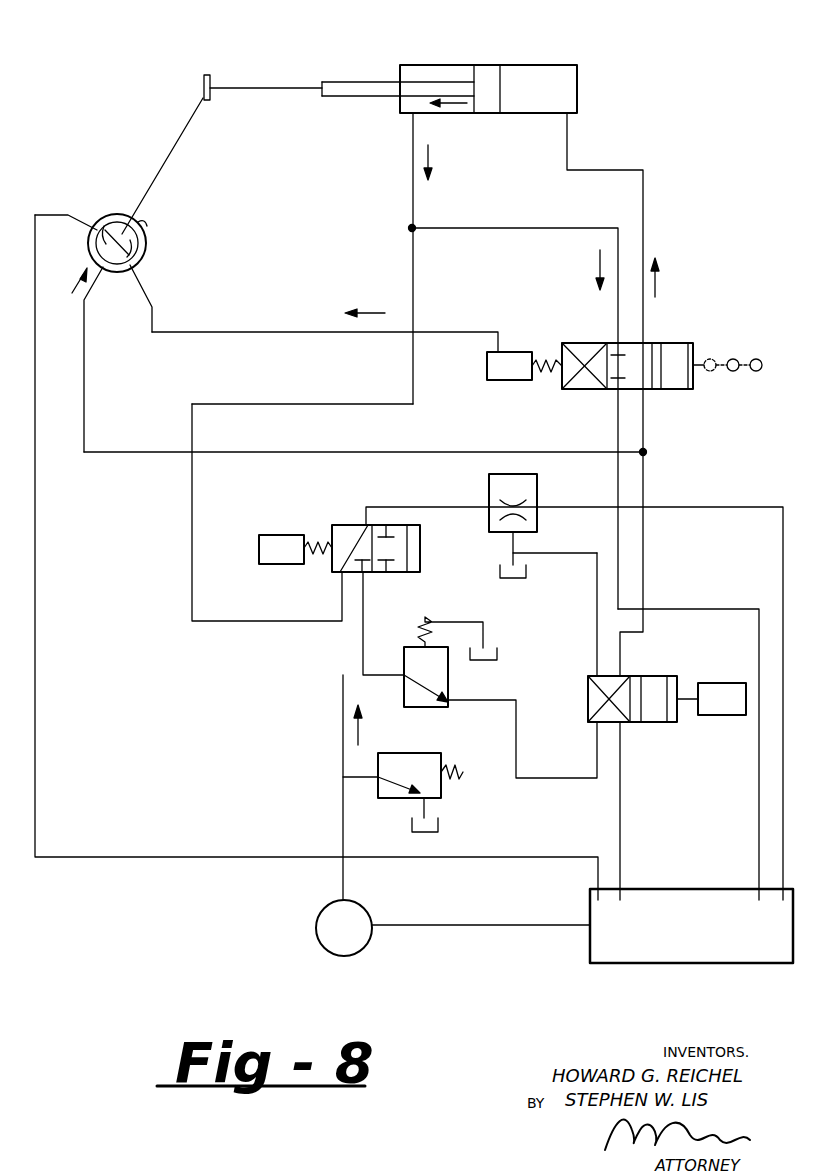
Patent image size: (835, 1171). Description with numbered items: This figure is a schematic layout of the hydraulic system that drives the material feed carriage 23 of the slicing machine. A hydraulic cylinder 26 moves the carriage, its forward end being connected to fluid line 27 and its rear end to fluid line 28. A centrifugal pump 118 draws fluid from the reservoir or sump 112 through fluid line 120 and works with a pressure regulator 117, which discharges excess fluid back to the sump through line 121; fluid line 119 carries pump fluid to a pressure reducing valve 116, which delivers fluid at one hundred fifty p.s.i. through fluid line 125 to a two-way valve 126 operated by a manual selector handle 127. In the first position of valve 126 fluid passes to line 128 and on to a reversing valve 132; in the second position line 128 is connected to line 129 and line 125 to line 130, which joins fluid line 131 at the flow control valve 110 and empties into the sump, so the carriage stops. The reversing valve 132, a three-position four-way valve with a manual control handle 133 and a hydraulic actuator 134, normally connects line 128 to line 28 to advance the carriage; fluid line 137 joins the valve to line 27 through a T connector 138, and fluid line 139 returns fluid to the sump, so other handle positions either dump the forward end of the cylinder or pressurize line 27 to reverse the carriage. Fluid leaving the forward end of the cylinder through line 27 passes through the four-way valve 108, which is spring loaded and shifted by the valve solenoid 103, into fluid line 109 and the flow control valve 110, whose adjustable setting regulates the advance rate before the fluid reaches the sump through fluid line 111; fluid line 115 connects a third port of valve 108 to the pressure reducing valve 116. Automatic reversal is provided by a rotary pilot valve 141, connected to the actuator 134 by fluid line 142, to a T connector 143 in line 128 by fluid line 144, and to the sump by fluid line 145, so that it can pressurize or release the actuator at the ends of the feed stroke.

The material feed carriage 23 is at (211, 72).
The hydraulic cylinder 26 is at (528, 65).
The fluid line 27 is at (413, 290).
The fluid line 28 is at (641, 197).
The valve solenoid 103 is at (278, 564).
The four-way valve 108 is at (420, 551).
The fluid line 109 is at (400, 506).
The flow control valve 110 is at (487, 490).
The fluid line 111 is at (781, 553).
The reservoir or sump 112 is at (691, 926).
The fluid line 115 is at (363, 646).
The pressure reducing valve 116 is at (425, 707).
The pressure regulator 117 is at (403, 798).
The centrifugal pump 118 is at (320, 945).
The fluid line 119 is at (343, 726).
The fluid line 120 is at (460, 925).
The line 121 is at (428, 813).
The fluid line 125 is at (520, 750).
The two-way valve 126 is at (645, 676).
The manual selector handle 127 is at (716, 715).
The line 128 is at (644, 487).
The line 129 is at (622, 818).
The line 130 is at (597, 652).
The fluid line 131 is at (528, 570).
The reversing valve 132 is at (678, 389).
The manual control handle 133 is at (730, 357).
The hydraulic actuator 134 is at (518, 352).
The fluid line 137 is at (505, 228).
The T connector 138 is at (410, 230).
The fluid line 139 is at (724, 609).
The rotary pilot valve 141 is at (143, 258).
The fluid line 142 is at (228, 332).
The T connector 143 is at (648, 452).
The fluid line 144 is at (452, 452).
The fluid line 145 is at (37, 604).